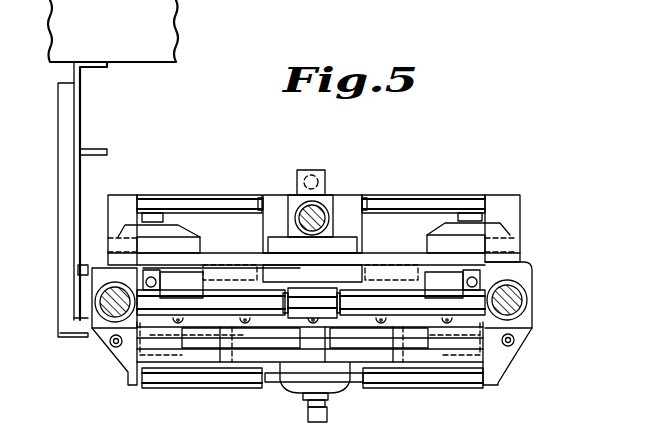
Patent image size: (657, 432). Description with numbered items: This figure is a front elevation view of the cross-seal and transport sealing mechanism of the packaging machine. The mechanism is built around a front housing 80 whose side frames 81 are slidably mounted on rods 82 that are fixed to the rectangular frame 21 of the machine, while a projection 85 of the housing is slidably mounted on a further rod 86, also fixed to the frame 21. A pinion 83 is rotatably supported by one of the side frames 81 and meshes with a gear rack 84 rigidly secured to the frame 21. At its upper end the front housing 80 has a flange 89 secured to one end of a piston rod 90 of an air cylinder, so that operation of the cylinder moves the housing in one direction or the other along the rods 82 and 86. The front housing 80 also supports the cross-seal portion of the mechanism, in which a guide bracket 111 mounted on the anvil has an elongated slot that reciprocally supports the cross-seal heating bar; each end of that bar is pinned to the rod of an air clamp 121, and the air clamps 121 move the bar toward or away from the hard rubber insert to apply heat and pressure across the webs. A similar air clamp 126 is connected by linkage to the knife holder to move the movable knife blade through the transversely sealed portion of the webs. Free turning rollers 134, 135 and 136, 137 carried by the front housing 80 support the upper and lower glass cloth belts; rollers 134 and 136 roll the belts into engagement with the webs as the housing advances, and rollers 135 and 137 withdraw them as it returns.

The frame 21 is at (138, 52).
The pinion 83 is at (82, 263).
The gear rack 84 is at (81, 318).
The side frame 81 is at (100, 265).
The rod 82 is at (110, 320).
The free turning roller 135 is at (218, 203).
The air clamp 121 is at (170, 232).
The flange 89 is at (298, 183).
The piston rod 90 is at (310, 175).
The rod 86 is at (322, 213).
The projection 85 is at (335, 237).
The guide bracket 111 is at (272, 258).
The front housing 80 is at (377, 273).
The free turning roller 134 is at (205, 298).
The free turning roller 136 is at (223, 312).
The free turning roller 137 is at (242, 378).
The air clamp 126 is at (332, 385).